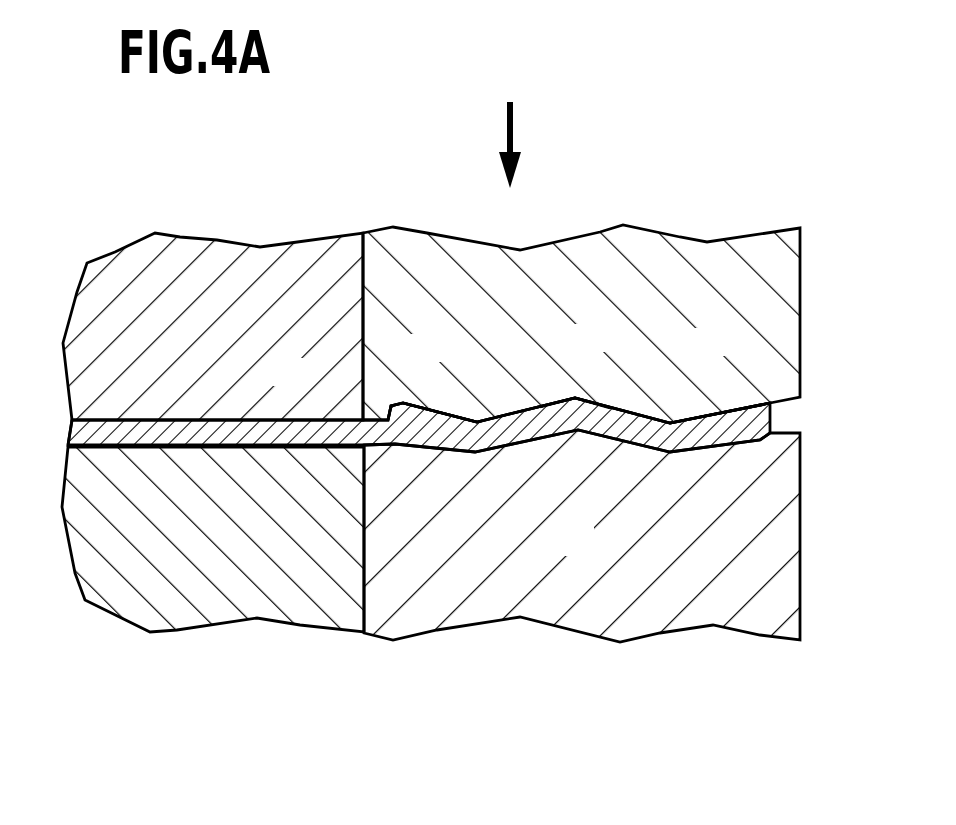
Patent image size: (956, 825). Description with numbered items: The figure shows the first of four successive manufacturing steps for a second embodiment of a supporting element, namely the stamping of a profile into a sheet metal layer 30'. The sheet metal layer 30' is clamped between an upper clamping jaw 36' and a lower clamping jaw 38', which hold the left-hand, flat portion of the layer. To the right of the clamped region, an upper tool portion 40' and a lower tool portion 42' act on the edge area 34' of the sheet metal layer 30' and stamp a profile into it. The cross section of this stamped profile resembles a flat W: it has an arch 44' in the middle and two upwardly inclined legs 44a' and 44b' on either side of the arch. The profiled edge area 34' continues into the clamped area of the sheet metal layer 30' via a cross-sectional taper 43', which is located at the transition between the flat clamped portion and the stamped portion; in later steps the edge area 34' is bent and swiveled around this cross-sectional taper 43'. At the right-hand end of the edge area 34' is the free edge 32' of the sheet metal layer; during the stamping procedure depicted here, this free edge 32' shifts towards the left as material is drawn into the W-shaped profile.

The sheet metal layer 30' is at (46, 411).
The free edge 32' is at (470, 425).
The edge area 34' is at (582, 478).
The clamping jaw 36' is at (213, 282).
The clamping jaw 38' is at (213, 575).
The tool portion 40' is at (621, 324).
The tool portion 42' is at (618, 536).
The cross-sectional taper 43' is at (335, 396).
The arch 44' is at (577, 364).
The upwardly inclined leg 44a' is at (720, 375).
The upwardly inclined leg 44b' is at (440, 377).